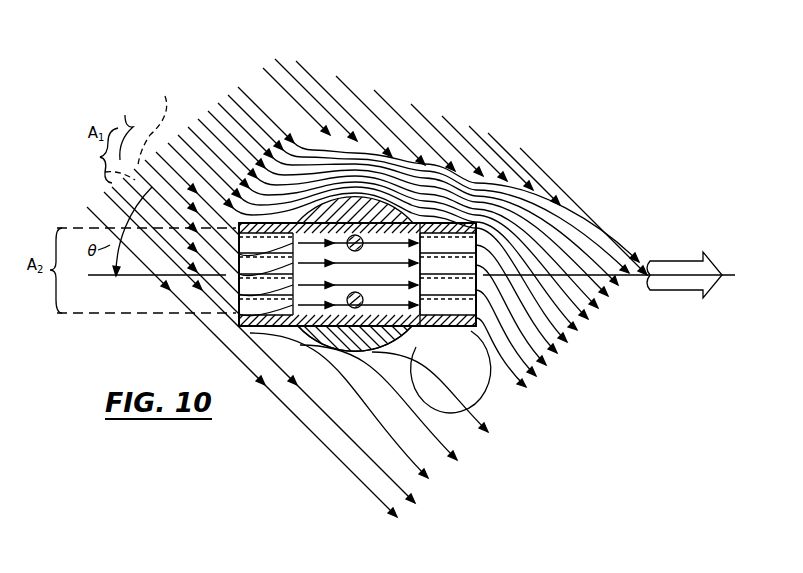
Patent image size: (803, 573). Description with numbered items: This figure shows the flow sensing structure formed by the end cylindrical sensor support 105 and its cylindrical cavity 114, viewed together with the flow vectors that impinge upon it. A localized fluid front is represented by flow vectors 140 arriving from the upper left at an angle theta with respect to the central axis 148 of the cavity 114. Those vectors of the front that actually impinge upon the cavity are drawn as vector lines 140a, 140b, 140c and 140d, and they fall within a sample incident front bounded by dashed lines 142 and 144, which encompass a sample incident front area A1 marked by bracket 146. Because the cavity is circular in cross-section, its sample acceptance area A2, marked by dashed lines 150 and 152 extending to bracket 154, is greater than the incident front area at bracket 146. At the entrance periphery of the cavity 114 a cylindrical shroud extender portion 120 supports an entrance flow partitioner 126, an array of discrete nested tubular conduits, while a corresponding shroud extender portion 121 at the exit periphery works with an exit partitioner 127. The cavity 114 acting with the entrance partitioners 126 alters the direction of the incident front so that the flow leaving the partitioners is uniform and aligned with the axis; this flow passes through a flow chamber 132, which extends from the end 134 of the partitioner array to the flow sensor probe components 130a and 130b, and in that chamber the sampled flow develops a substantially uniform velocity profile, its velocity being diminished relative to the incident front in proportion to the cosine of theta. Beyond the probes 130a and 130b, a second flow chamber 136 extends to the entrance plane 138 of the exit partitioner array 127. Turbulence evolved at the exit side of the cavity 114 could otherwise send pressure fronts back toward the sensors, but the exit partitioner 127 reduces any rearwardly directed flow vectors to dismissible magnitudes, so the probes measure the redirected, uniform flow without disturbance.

The cylindrical sensor support 105 is at (412, 379).
The cylindrical cavity 114 is at (286, 403).
The shroud extender portion 120 is at (272, 222).
The shroud extender portion 121 is at (462, 190).
The entrance flow partitioner 126 is at (240, 292).
The exit partitioner 127 is at (490, 248).
The flow sensor probe component 130a is at (381, 277).
The flow sensor probe component 130b is at (403, 222).
The flow chamber 132 is at (300, 336).
The end of partitioner array 134 is at (355, 234).
The flow chamber 136 is at (447, 222).
The entrance plane of exit partitioner array 138 is at (421, 342).
The flow vectors 140 is at (198, 166).
The vector line 140a is at (146, 176).
The vector line 140b is at (158, 160).
The vector line 140c is at (163, 188).
The vector line 140d is at (170, 190).
The dashed line 142 is at (105, 172).
The dashed line 144 is at (149, 125).
The bracket 146 is at (125, 115).
The central axis 148 is at (140, 278).
The dashed line 150 is at (92, 228).
The dashed line 152 is at (100, 317).
The bracket 154 is at (53, 305).